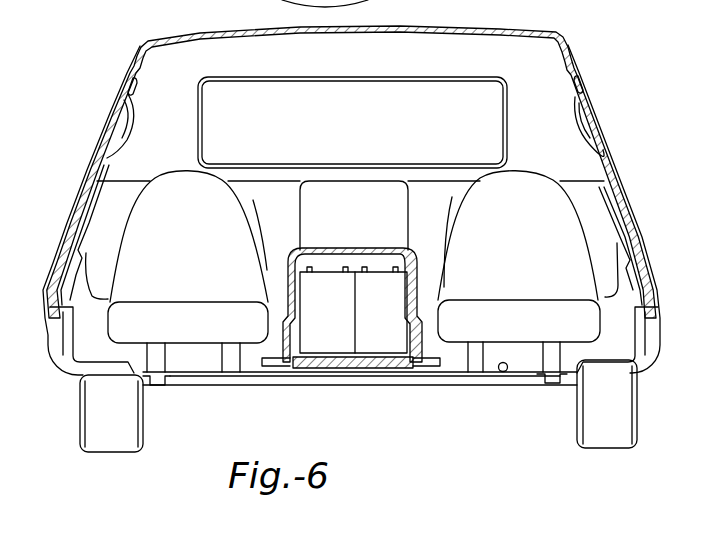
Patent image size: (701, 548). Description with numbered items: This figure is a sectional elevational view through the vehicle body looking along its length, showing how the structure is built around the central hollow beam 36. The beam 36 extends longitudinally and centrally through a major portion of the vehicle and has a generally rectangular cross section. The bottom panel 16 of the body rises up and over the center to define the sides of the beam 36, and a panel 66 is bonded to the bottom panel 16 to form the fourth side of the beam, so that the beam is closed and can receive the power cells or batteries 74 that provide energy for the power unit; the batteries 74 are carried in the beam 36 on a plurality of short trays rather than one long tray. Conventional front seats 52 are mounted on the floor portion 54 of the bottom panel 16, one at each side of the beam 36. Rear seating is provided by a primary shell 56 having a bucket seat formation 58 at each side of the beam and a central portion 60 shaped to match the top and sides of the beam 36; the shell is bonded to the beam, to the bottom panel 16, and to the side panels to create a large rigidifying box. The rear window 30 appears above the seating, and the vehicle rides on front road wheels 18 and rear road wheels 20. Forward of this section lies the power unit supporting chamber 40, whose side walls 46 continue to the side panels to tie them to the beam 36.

The bottom panel 16 is at (452, 370).
The front road wheels 18 is at (700, 112).
The rear road wheels 20 is at (577, 425).
The rear window 30 is at (455, 85).
The hollow beam 36 is at (334, 240).
The power unit supporting chamber 40 is at (127, 11).
The side walls 46 is at (181, 6).
The front seats 52 is at (231, 253).
The floor portion 54 is at (506, 372).
The primary shell 56 is at (419, 172).
The bucket seat formation 58 is at (247, 195).
The central portion 60 is at (397, 238).
The panel 66 is at (297, 367).
The batteries 74 is at (383, 328).